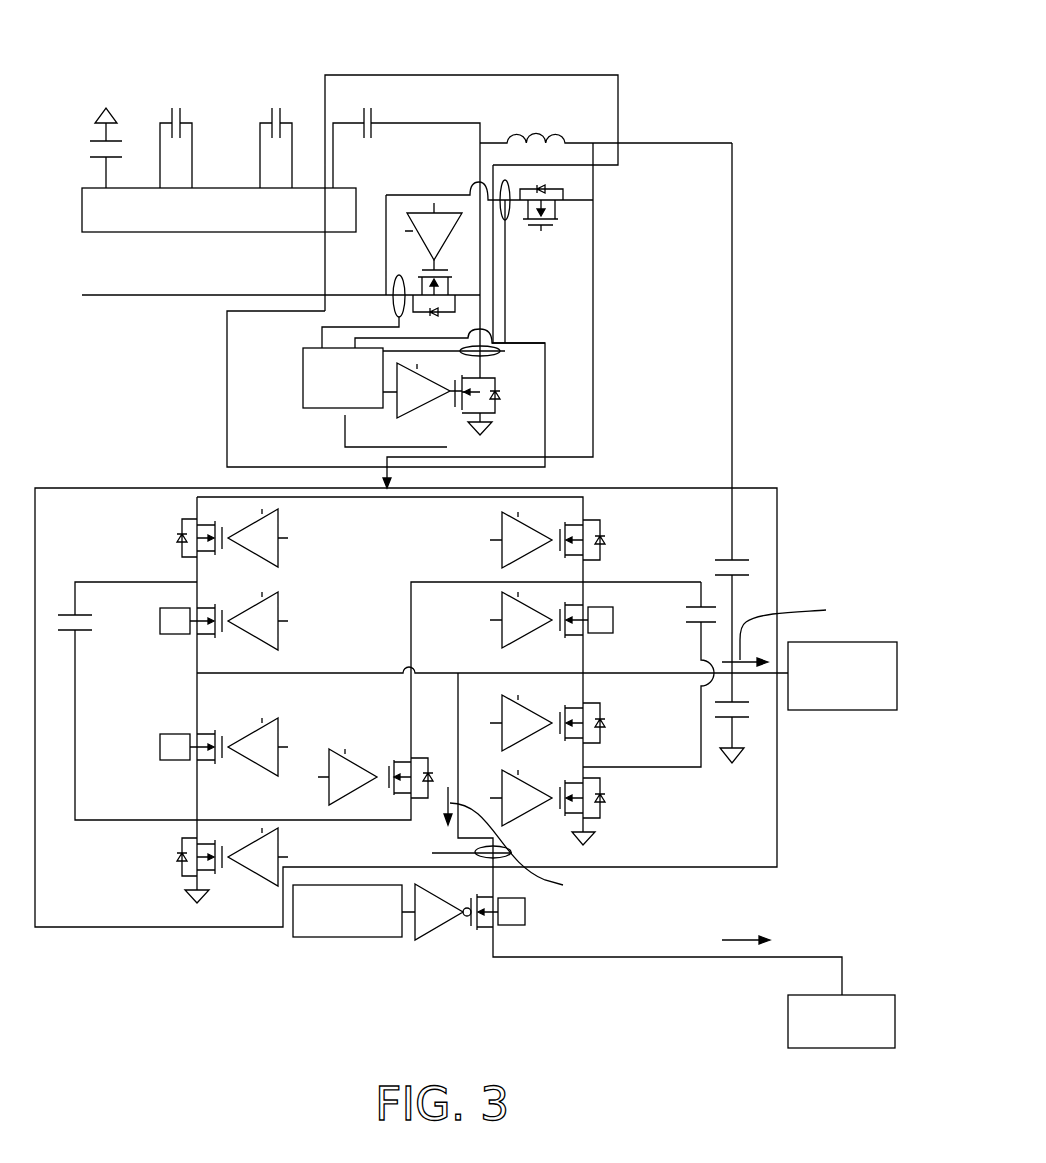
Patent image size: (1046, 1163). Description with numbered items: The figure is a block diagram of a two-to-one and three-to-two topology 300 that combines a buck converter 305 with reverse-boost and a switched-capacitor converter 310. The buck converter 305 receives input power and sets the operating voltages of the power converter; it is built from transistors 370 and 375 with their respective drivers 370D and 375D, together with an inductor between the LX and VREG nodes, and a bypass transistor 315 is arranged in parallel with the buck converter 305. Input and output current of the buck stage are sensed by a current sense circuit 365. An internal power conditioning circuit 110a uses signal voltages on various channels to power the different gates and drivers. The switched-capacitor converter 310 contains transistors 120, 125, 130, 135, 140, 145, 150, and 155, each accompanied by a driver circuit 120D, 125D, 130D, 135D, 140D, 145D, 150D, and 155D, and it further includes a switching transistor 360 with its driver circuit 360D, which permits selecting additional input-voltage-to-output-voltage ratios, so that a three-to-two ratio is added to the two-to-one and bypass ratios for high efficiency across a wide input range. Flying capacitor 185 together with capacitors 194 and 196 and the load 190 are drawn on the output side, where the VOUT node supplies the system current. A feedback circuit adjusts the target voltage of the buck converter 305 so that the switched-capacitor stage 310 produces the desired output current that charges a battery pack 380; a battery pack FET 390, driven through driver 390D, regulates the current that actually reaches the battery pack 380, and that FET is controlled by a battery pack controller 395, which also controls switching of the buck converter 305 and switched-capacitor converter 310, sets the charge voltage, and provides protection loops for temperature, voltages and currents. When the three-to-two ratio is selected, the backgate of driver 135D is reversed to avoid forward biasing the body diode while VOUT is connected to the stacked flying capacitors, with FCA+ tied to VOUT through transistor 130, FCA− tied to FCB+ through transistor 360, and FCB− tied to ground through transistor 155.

The 2:1 and 3:2 topology 300 is at (773, 97).
The buck converter 305 is at (572, 75).
The switched-capacitor converter 310 is at (776, 582).
The bypass transistor 315 is at (541, 220).
The internal power conditioning circuit 110a is at (243, 226).
The transistor 120 is at (178, 538).
The driver circuit 120D is at (288, 538).
The transistor 125 is at (604, 540).
The driver circuit 125D is at (492, 540).
The transistor 130 is at (170, 621).
The driver circuit 130D is at (288, 621).
The transistor 135 is at (610, 620).
The driver circuit 135D is at (492, 620).
The transistor 140 is at (171, 747).
The driver circuit 140D is at (282, 745).
The transistor 145 is at (604, 723).
The driver circuit 145D is at (534, 717).
The transistor 150 is at (178, 857).
The driver circuit 150D is at (284, 857).
The transistor 155 is at (604, 798).
The driver circuit 155D is at (532, 790).
The flying capacitor 185 is at (688, 578).
The load 190 is at (859, 688).
The output capacitor 194 is at (748, 553).
The capacitor 196 is at (748, 708).
The switching transistor 360 is at (421, 765).
The driver circuit 360D is at (325, 782).
The current sense circuit 365 is at (362, 390).
The transistor 370 is at (412, 277).
The driver 370D is at (418, 241).
The transistor 375 is at (498, 393).
The driver 375D is at (345, 415).
The battery pack 380 is at (860, 1032).
The battery pack FET 390 is at (519, 918).
The driver 390D is at (433, 927).
The battery pack controller 395 is at (367, 923).